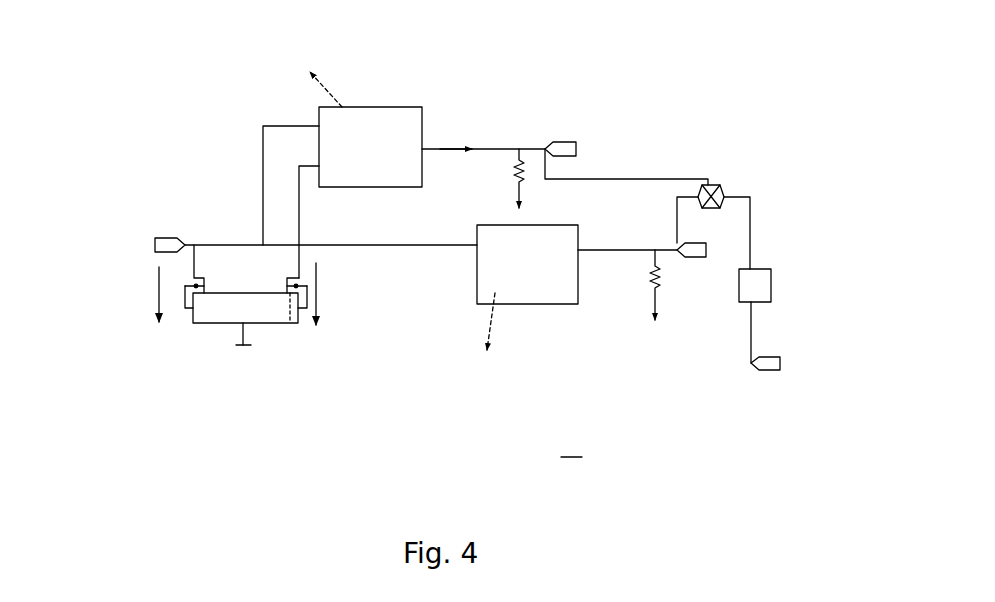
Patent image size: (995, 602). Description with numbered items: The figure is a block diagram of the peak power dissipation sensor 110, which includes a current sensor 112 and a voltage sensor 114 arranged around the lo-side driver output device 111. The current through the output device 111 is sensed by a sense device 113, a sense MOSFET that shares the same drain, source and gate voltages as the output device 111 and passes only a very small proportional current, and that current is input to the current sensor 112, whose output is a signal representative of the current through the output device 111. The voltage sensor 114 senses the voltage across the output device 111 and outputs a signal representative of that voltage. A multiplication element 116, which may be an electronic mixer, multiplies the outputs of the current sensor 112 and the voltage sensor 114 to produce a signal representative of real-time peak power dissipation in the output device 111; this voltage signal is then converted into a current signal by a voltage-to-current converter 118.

The peak power dissipation sensor 110 is at (578, 80).
The output device 111 is at (185, 305).
The current sensor 112 is at (377, 107).
The sense device 113 is at (287, 300).
The voltage sensor 114 is at (555, 304).
The multiplication element 116 is at (708, 185).
The voltage-to-current converter 118 is at (771, 290).